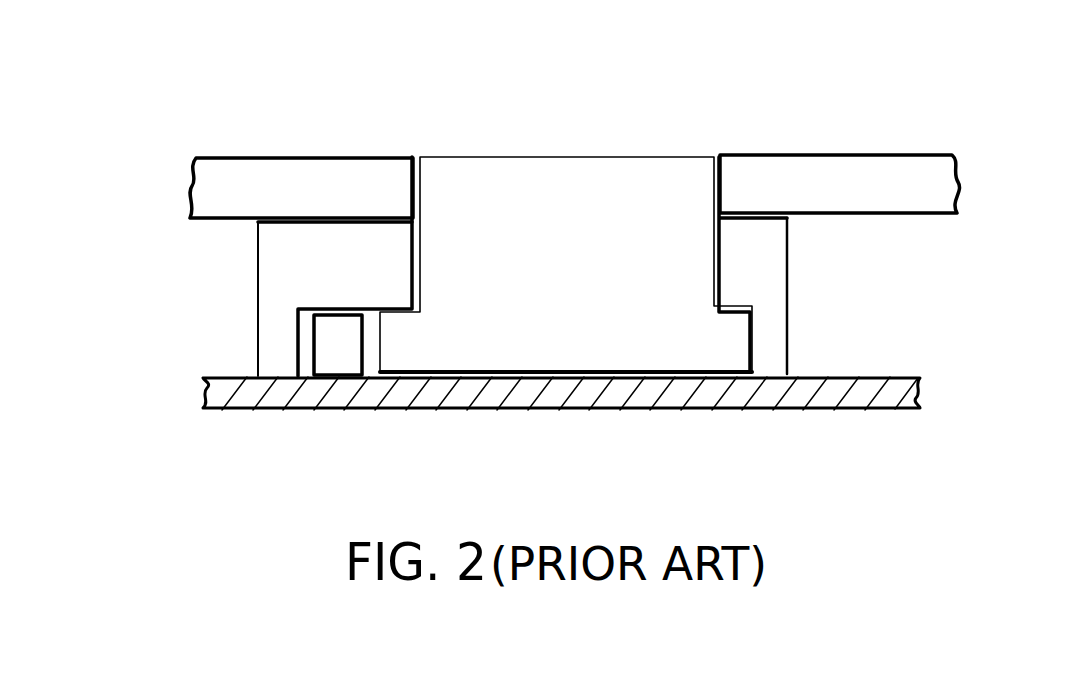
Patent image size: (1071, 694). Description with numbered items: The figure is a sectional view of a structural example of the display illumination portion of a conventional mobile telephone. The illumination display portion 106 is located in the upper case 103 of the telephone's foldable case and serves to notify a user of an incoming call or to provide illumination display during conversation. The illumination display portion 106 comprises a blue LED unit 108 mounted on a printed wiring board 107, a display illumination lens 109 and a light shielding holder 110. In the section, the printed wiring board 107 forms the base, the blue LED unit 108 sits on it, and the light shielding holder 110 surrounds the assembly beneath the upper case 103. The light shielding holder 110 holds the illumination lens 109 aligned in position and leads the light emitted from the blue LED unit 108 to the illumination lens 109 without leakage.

The upper case 103 is at (836, 170).
The illumination display portion 106 is at (652, 139).
The printed wiring board 107 is at (876, 393).
The blue LED unit 108 is at (338, 358).
The display illumination lens 109 is at (570, 355).
The light shielding holder 110 is at (244, 282).